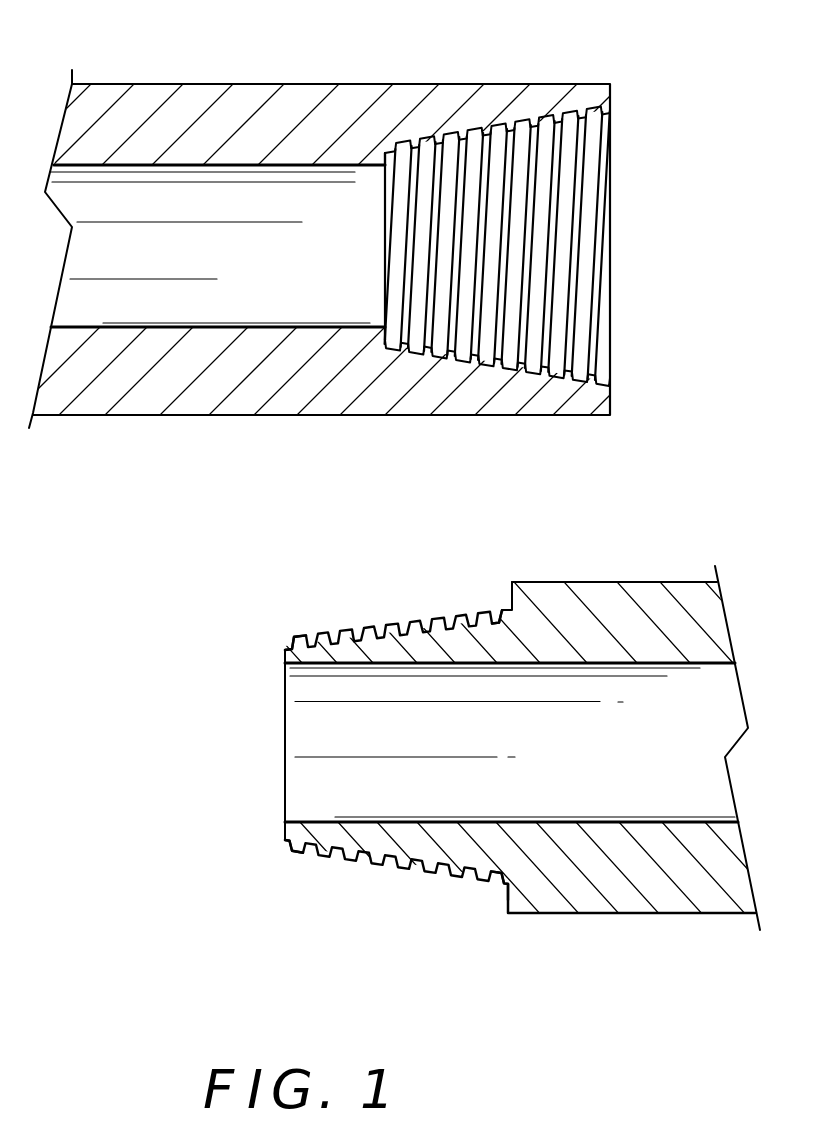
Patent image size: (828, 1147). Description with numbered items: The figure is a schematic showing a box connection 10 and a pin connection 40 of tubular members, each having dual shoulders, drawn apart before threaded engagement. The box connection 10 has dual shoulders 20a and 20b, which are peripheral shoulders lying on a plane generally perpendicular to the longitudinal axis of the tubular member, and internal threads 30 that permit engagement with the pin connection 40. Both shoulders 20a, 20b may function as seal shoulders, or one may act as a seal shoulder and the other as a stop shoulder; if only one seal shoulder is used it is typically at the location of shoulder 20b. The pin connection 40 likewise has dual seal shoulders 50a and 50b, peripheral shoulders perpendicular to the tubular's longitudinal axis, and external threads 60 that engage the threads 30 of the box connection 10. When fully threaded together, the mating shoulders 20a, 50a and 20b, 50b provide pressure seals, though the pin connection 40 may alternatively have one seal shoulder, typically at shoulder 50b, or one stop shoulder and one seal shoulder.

The box connection 10 is at (495, 78).
The threads 30 is at (582, 134).
The shoulder 20a is at (386, 338).
The shoulder 20b is at (613, 393).
The pin connection 40 is at (663, 918).
The threads 60 is at (420, 873).
The seal shoulder 50a is at (282, 836).
The seal shoulder 50b is at (508, 897).